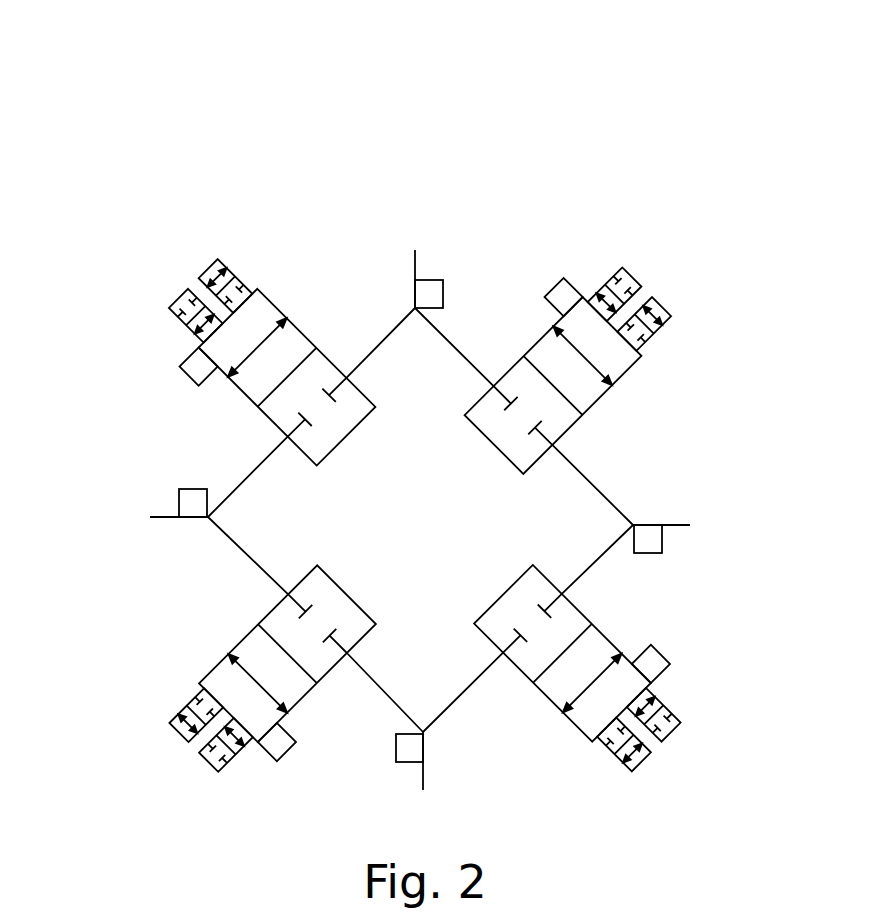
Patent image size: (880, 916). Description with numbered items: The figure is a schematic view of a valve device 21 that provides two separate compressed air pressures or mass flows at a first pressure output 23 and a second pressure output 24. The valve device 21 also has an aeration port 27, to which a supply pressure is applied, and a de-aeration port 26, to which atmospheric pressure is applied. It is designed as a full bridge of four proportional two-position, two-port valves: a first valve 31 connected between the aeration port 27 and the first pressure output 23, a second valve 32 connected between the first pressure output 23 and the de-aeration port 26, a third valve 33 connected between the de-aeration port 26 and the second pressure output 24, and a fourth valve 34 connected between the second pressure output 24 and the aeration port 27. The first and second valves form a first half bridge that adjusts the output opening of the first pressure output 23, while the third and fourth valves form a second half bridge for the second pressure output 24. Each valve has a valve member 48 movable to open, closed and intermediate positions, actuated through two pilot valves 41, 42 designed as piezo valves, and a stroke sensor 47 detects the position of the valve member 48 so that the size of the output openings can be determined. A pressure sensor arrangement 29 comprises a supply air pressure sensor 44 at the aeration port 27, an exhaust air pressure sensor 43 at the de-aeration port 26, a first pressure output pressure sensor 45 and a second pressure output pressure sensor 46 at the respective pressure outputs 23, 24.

The valve device 21 is at (98, 98).
The first pressure output 23 is at (679, 525).
The second pressure output 24 is at (160, 517).
The de-aeration port 26 is at (423, 775).
The aeration port 27 is at (413, 266).
The pressure sensor arrangement 29 is at (427, 528).
The first 2/2-way valve 31 is at (597, 401).
The second 2/2-way valve 32 is at (541, 690).
The third 2/2-way valve 33 is at (215, 666).
The fourth 2/2-way valve 34 is at (282, 312).
The pilot valve 41 is at (179, 297).
The pilot valve 42 is at (208, 268).
The exhaust air pressure sensor 43 is at (410, 751).
The supply air pressure sensor 44 is at (433, 290).
The first pressure output pressure sensor 45 is at (652, 543).
The second pressure output pressure sensor 46 is at (193, 495).
The stroke sensor 47 is at (195, 365).
The valve member 48 is at (438, 505).